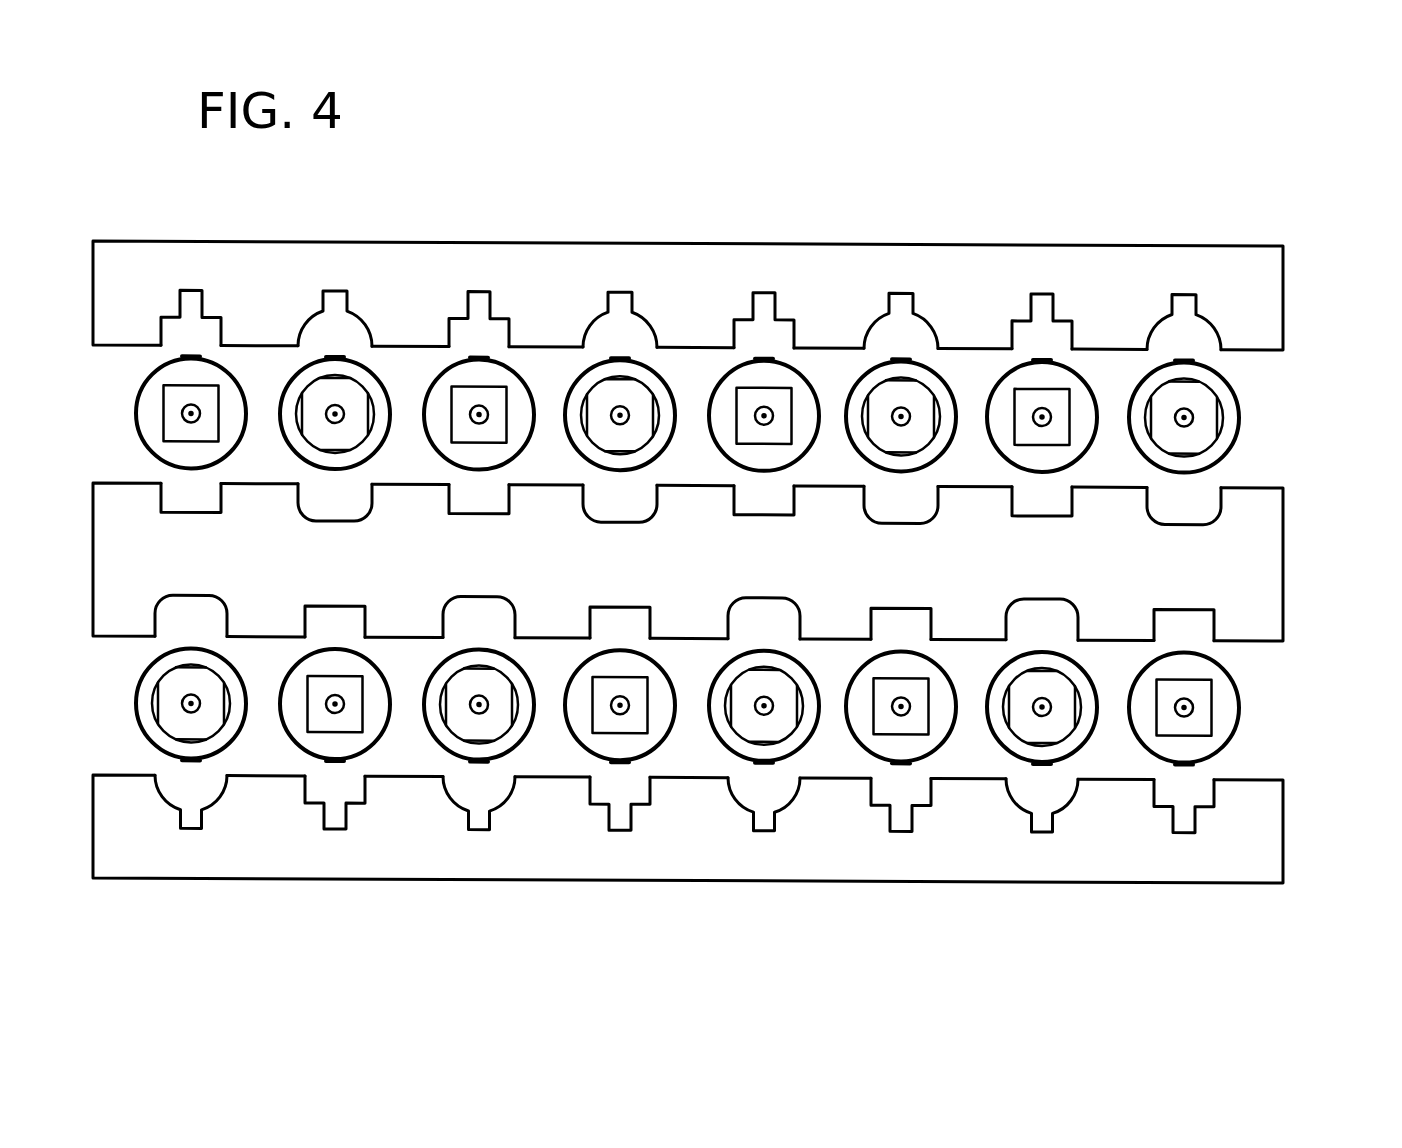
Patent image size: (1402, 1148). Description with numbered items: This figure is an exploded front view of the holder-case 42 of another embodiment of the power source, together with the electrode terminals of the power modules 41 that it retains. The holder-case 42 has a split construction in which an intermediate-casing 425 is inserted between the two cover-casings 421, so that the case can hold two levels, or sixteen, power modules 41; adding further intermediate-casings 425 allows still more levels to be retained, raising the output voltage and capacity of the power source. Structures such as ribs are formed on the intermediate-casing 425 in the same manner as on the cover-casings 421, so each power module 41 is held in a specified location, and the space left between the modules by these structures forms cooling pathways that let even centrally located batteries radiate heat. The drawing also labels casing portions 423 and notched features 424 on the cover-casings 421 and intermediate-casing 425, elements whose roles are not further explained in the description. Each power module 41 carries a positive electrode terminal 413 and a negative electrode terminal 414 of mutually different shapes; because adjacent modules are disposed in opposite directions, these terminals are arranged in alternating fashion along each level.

The holder-case 42 is at (682, 194).
The cover-casing 421 is at (1182, 235).
The holding plate body 423 is at (840, 257).
The positioning notch 424 is at (921, 328).
The intermediate-casing 425 is at (1300, 547).
The power module 41 is at (1252, 384).
The positive electrode terminal 413 is at (1205, 420).
The negative electrode terminal 414 is at (1202, 715).